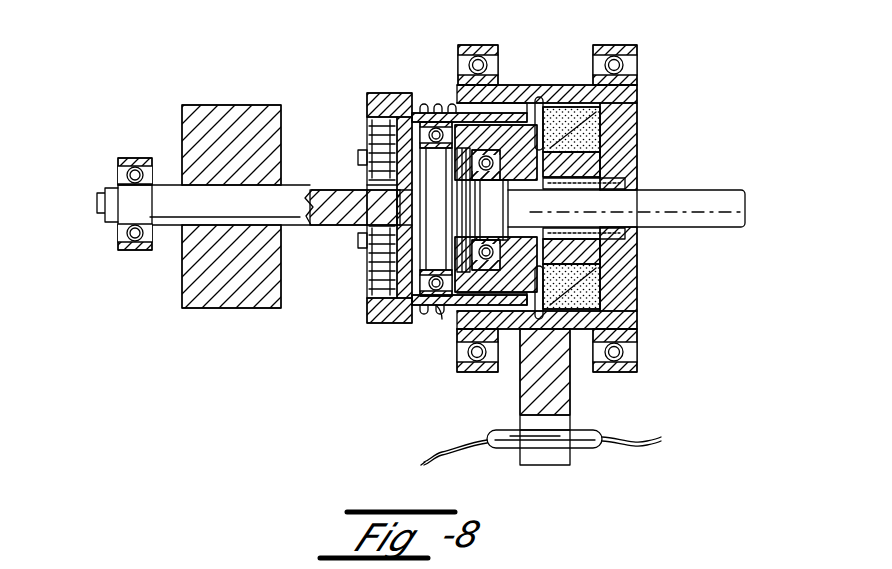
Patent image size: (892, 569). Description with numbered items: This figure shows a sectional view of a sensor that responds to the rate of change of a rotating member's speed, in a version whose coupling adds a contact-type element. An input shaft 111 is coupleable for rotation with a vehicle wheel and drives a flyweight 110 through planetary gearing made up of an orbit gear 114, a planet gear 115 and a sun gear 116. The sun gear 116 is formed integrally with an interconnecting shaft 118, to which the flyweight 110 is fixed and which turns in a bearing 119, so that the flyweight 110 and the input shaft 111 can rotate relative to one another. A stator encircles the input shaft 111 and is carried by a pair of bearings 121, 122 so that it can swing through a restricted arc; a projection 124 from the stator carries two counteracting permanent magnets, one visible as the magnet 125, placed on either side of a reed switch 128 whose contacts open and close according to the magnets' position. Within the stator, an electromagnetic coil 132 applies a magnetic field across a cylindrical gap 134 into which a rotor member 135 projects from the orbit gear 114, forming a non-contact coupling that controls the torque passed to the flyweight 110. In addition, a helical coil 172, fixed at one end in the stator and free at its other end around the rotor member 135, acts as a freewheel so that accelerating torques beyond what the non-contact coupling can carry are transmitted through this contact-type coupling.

The flyweight 110 is at (250, 105).
The input shaft 111 is at (725, 165).
The orbit gear 114 is at (368, 296).
The planet gear 115 is at (370, 141).
The sun gear 116 is at (357, 191).
The interconnecting shaft 118 is at (303, 228).
The bearing 119 is at (145, 130).
The bearing 121 is at (495, 22).
The bearing 122 is at (650, 20).
The projection 124 is at (527, 397).
The permanent magnet 125 is at (556, 419).
The reed switch 128 is at (582, 440).
The electromagnetic coil 132 is at (590, 120).
The gap 134 is at (501, 104).
The rotor member 135 is at (442, 322).
The helical coil 172 is at (433, 100).